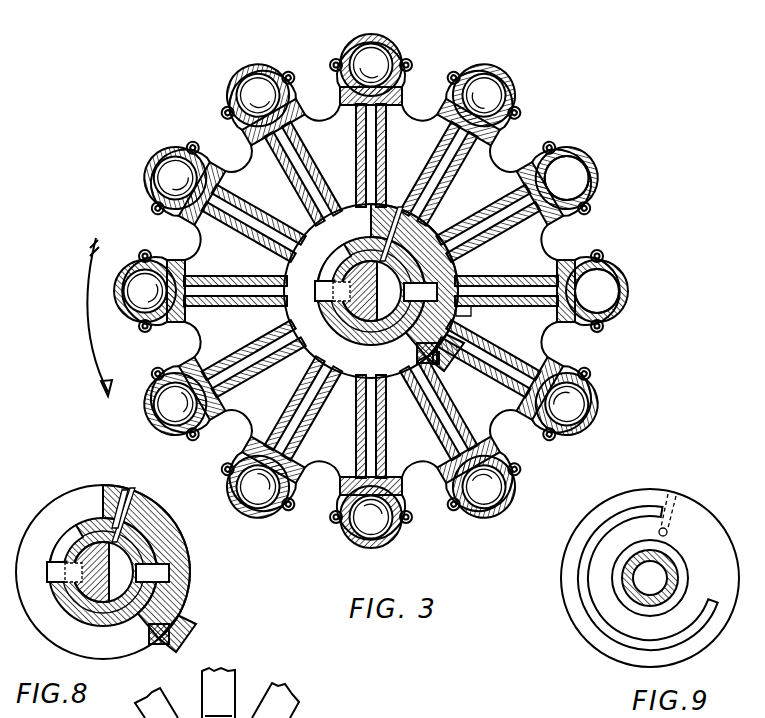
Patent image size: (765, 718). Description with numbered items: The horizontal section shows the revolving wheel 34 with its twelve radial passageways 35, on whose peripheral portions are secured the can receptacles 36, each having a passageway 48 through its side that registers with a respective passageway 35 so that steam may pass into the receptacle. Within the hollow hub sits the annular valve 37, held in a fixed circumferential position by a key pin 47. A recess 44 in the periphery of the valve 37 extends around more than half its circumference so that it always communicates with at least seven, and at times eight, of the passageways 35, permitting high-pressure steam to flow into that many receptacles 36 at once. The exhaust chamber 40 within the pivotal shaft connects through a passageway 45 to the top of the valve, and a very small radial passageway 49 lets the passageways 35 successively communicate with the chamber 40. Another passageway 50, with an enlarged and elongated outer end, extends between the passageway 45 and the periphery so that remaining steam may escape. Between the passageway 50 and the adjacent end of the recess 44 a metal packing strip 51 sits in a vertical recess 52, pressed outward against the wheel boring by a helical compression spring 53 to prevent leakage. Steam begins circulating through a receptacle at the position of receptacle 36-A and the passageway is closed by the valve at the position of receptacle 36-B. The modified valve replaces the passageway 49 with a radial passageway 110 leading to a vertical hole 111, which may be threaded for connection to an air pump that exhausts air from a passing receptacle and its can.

In FIG. 3, the wheel 34 is at (544, 251).
In FIG. 3, the passageways 35 is at (491, 373).
In FIG. 3, the can receptacles 36 is at (595, 181).
In FIG. 3, the receptacle 36-A is at (398, 52).
In FIG. 3, the receptacle 36-B is at (481, 520).
In FIG. 3, the annular valve 37 is at (344, 262).
In FIG. 3, the chamber 40 is at (371, 291).
In FIG. 3, the recess 44 is at (371, 291).
In FIG. 3, the passageway 45 is at (420, 292).
In FIG. 3, the key pin 47 is at (457, 263).
In FIG. 3, the passageway 48 is at (541, 196).
In FIG. 3, the passageway 49 is at (399, 281).
In FIG. 3, the passageway 50 is at (462, 317).
In FIG. 3, the packing strip 51 is at (443, 353).
In FIG. 3, the recess 52 is at (420, 350).
In FIG. 3, the helical compression spring 53 is at (432, 360).
In FIG. 8, the passageway 110 is at (127, 490).
In FIG. 9, the passageway 110 is at (671, 494).
In FIG. 9, the vertical hole 111 is at (668, 532).